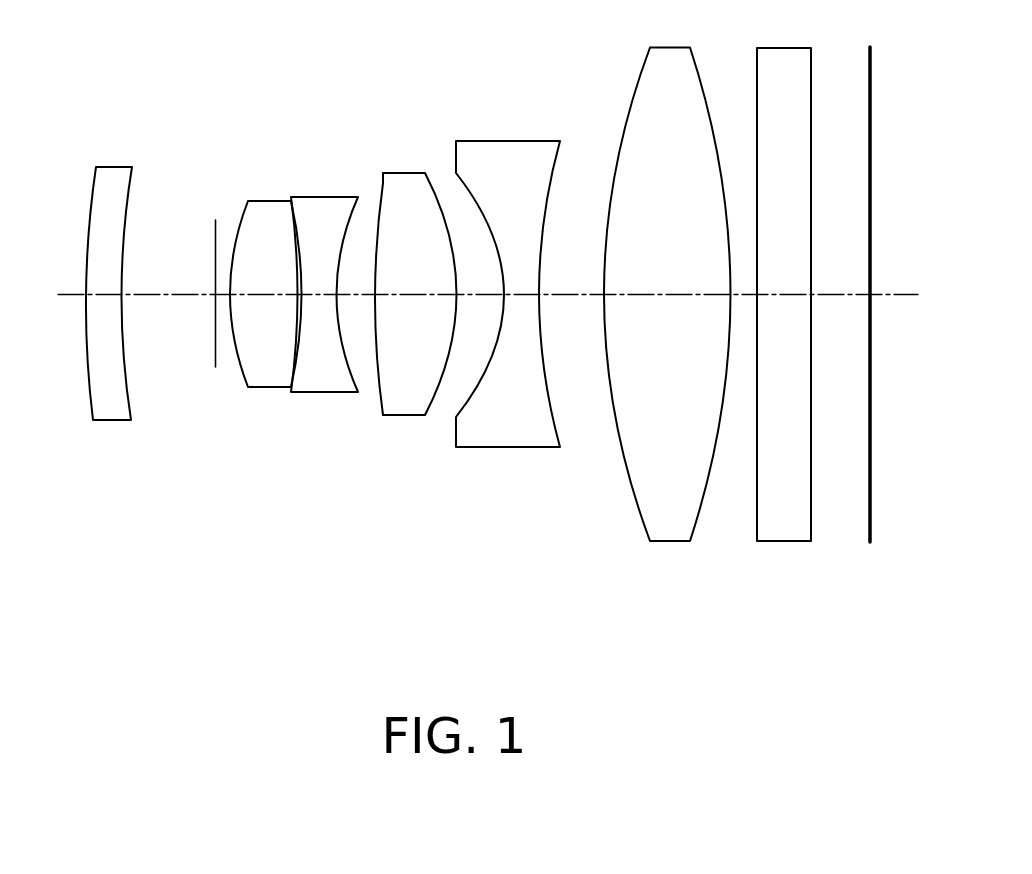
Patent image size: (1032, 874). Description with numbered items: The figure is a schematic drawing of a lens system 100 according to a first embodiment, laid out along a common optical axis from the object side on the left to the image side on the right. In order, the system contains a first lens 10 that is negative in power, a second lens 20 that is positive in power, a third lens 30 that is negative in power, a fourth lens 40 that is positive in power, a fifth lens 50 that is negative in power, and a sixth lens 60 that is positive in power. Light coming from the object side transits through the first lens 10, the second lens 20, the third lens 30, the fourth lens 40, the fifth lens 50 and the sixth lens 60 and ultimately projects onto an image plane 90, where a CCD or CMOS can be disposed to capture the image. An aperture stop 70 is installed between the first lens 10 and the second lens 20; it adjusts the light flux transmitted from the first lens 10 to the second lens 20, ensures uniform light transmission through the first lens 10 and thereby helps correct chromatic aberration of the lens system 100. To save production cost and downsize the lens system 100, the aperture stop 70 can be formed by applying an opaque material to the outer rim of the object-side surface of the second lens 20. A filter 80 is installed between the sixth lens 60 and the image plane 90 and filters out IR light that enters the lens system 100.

The lens system 100 is at (235, 52).
The first lens 10 is at (110, 402).
The second lens 20 is at (270, 365).
The third lens 30 is at (328, 377).
The fourth lens 40 is at (405, 403).
The fifth lens 50 is at (510, 422).
The sixth lens 60 is at (669, 512).
The aperture stop 70 is at (215, 306).
The filter 80 is at (776, 518).
The image plane 90 is at (870, 508).